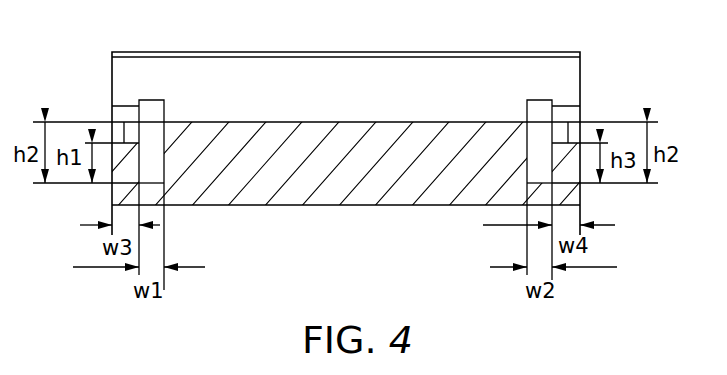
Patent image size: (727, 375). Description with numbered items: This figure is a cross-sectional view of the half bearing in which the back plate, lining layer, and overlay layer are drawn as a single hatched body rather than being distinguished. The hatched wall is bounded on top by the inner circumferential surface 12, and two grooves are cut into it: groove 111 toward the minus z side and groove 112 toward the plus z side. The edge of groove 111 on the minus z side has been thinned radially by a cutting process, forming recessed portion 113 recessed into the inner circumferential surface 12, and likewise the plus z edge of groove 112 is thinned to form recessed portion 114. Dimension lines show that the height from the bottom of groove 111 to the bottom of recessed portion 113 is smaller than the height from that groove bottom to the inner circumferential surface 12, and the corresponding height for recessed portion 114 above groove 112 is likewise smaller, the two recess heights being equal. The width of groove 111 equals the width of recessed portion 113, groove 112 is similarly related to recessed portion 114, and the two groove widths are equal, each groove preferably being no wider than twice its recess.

The inner circumferential surface 12 is at (338, 122).
The groove 111 is at (152, 140).
The groove 112 is at (541, 143).
The recessed portion 113 is at (124, 122).
The recessed portion 114 is at (568, 122).